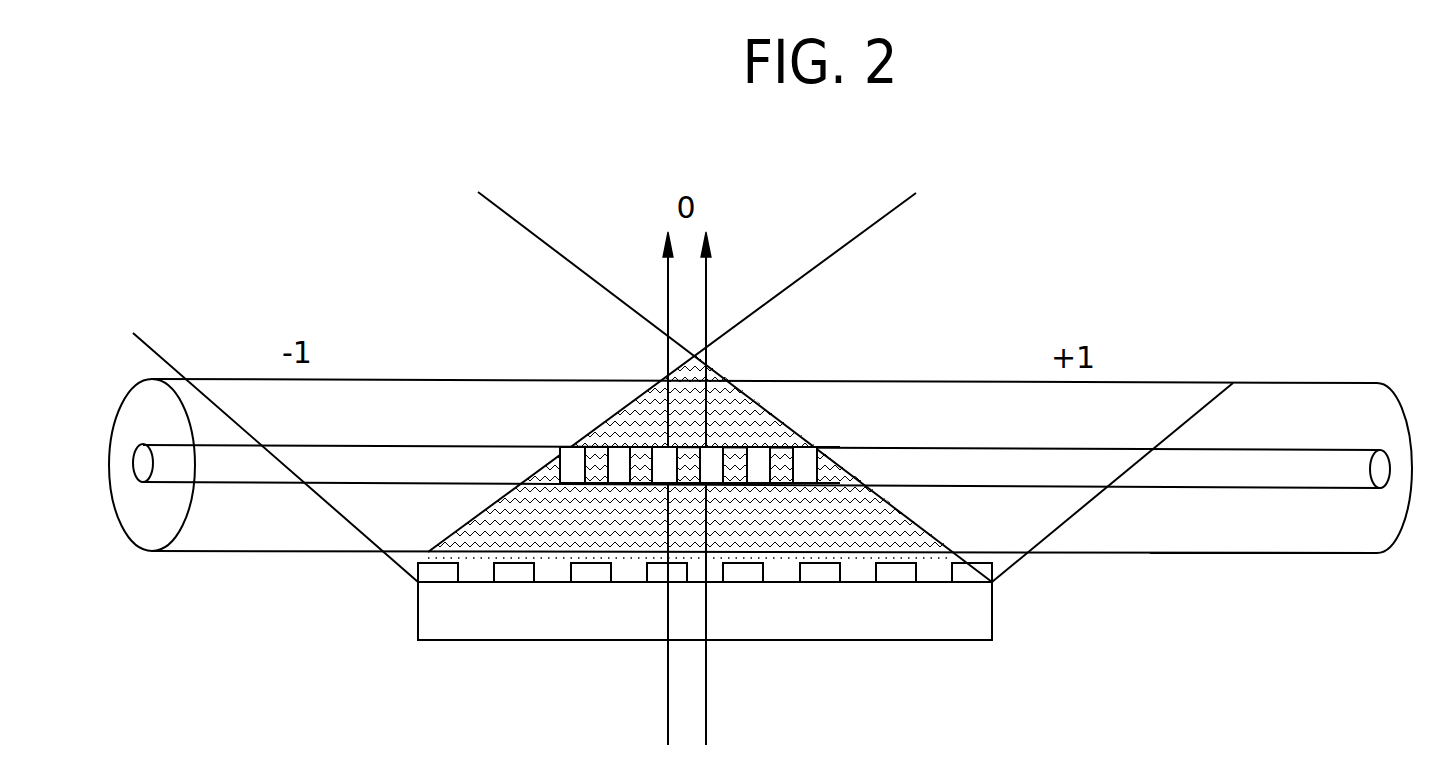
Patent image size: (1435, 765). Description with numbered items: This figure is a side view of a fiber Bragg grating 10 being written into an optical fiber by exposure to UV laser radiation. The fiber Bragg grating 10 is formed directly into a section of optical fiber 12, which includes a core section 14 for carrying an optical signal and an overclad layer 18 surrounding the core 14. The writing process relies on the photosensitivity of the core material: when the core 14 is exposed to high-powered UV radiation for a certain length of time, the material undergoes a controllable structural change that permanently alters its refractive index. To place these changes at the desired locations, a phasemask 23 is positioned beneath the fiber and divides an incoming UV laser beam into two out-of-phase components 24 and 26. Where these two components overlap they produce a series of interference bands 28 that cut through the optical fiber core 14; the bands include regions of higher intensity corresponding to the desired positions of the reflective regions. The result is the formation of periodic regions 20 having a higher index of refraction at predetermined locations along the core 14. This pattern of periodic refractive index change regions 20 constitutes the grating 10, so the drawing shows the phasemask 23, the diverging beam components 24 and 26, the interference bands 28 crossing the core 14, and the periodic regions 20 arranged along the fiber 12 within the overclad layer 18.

The fiber Bragg grating 10 is at (770, 433).
The optical fiber 12 is at (1183, 383).
The core section 14 is at (1290, 450).
The overclad layer 18 is at (1282, 538).
The regions having a higher index of refraction 20 is at (820, 448).
The phasemask 23 is at (992, 625).
The out-of-phase component 24 is at (354, 242).
The out-of-phase component 26 is at (962, 215).
The interference bands 28 is at (629, 405).